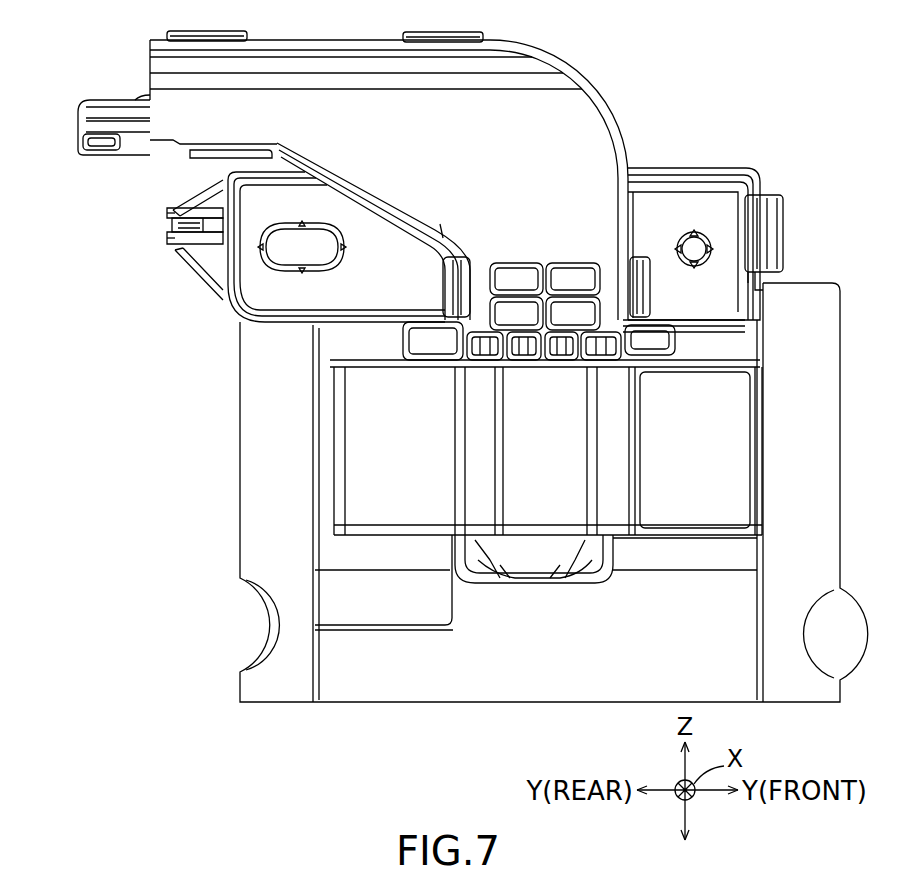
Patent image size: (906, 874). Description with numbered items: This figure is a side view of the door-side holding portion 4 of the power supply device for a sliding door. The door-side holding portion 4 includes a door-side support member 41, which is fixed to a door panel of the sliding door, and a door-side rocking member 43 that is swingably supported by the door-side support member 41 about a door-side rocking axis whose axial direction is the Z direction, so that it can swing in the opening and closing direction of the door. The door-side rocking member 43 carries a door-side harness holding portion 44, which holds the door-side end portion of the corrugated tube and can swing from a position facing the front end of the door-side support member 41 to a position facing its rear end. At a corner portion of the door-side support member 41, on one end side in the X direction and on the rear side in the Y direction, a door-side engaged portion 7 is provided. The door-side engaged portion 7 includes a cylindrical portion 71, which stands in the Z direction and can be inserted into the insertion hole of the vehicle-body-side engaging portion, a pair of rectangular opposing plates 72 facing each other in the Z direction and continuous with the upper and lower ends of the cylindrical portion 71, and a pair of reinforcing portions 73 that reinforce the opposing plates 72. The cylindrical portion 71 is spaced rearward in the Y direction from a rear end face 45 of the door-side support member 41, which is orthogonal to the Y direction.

The door-side holding portion 4 is at (618, 106).
The door-side engaged portion 7 is at (139, 233).
The cylindrical portion 71 is at (188, 224).
The opposing plate 72 is at (170, 211).
The reinforcing portion 73 is at (203, 200).
The door-side support member 41 is at (520, 435).
The door-side rocking member 43 is at (505, 487).
The door-side harness holding portion 44 is at (478, 482).
The rear end face 45 is at (226, 284).